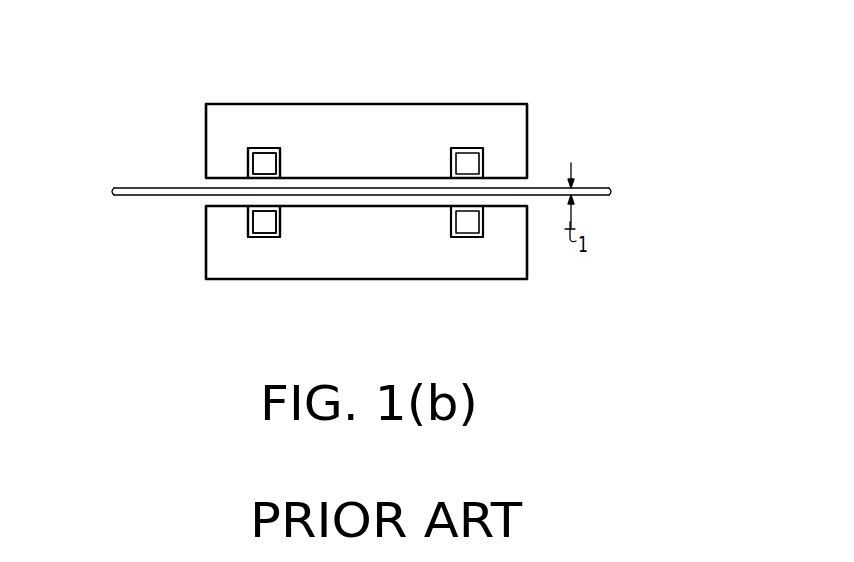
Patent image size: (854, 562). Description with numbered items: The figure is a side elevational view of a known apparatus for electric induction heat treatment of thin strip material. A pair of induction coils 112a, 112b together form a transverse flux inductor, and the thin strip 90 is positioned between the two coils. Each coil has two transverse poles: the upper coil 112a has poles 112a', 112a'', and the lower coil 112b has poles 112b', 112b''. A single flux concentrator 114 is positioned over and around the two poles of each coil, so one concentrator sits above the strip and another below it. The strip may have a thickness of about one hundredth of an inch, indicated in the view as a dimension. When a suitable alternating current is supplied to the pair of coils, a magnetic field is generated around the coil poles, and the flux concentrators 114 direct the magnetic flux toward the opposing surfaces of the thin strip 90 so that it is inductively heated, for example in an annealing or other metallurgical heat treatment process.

The thin strip 90 is at (128, 186).
The flux concentrator 114 is at (386, 152).
The induction coil 112a is at (190, 139).
The pole 112a' is at (291, 113).
The pole 112a'' is at (489, 110).
The induction coil 112b is at (189, 240).
The pole 112b' is at (286, 269).
The pole 112b'' is at (499, 268).